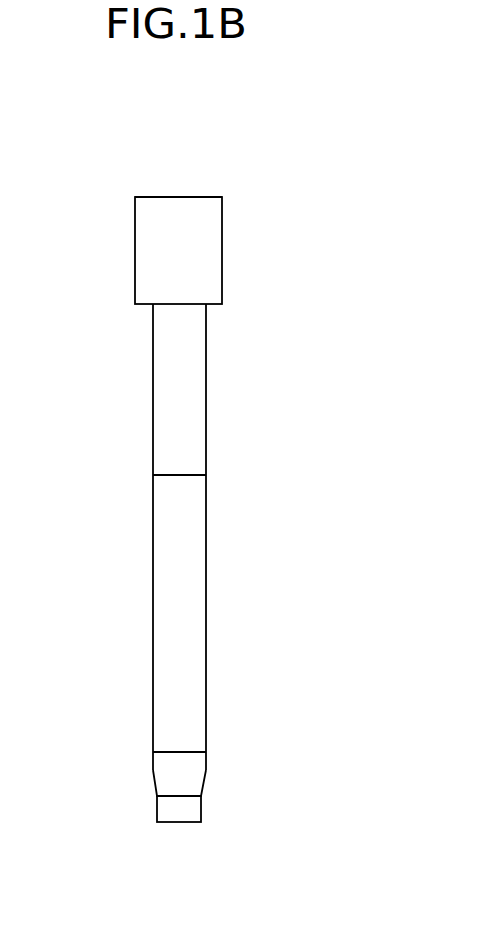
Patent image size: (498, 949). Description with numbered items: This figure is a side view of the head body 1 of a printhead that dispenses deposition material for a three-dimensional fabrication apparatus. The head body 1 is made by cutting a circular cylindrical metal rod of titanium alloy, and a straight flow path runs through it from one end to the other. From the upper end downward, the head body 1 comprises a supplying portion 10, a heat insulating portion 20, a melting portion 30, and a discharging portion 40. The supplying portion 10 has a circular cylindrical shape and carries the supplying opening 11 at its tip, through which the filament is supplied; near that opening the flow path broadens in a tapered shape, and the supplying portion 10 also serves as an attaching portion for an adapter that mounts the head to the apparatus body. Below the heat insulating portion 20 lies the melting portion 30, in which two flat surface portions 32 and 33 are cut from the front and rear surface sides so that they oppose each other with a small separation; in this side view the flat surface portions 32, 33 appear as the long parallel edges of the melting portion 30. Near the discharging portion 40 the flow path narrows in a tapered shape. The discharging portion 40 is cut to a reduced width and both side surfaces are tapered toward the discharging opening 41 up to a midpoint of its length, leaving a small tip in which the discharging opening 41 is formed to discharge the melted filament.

The head body 1 is at (230, 152).
The supplying portion 10 is at (209, 208).
The supplying opening 11 is at (163, 197).
The heat insulating portion 20 is at (168, 342).
The melting portion 30 is at (216, 622).
The flat surface portion 32 is at (152, 540).
The flat surface portion 33 is at (281, 750).
The discharging portion 40 is at (254, 833).
The discharging opening 41 is at (177, 822).